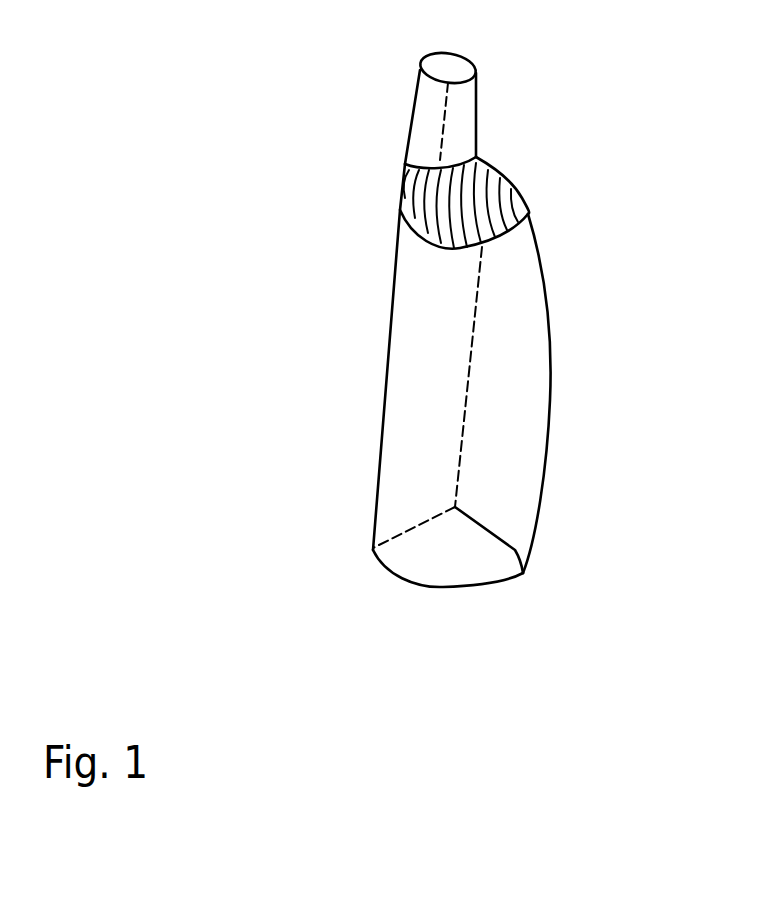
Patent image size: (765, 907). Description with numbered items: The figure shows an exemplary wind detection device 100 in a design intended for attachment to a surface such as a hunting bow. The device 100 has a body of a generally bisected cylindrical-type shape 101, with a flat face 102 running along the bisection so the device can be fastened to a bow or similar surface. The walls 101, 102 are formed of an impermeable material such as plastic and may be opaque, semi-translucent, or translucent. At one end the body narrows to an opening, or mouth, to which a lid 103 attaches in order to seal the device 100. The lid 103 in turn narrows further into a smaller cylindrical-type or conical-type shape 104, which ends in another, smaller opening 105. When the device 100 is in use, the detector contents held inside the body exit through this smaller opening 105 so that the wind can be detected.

The wind detection device 100 is at (368, 712).
The bisected cylindrical-type shape 101 is at (550, 383).
The flat face 102 is at (385, 413).
The lid 103 is at (516, 178).
The cylindrical-type or conical-type shape 104 is at (478, 113).
The smaller opening (mouth) 105 is at (465, 58).